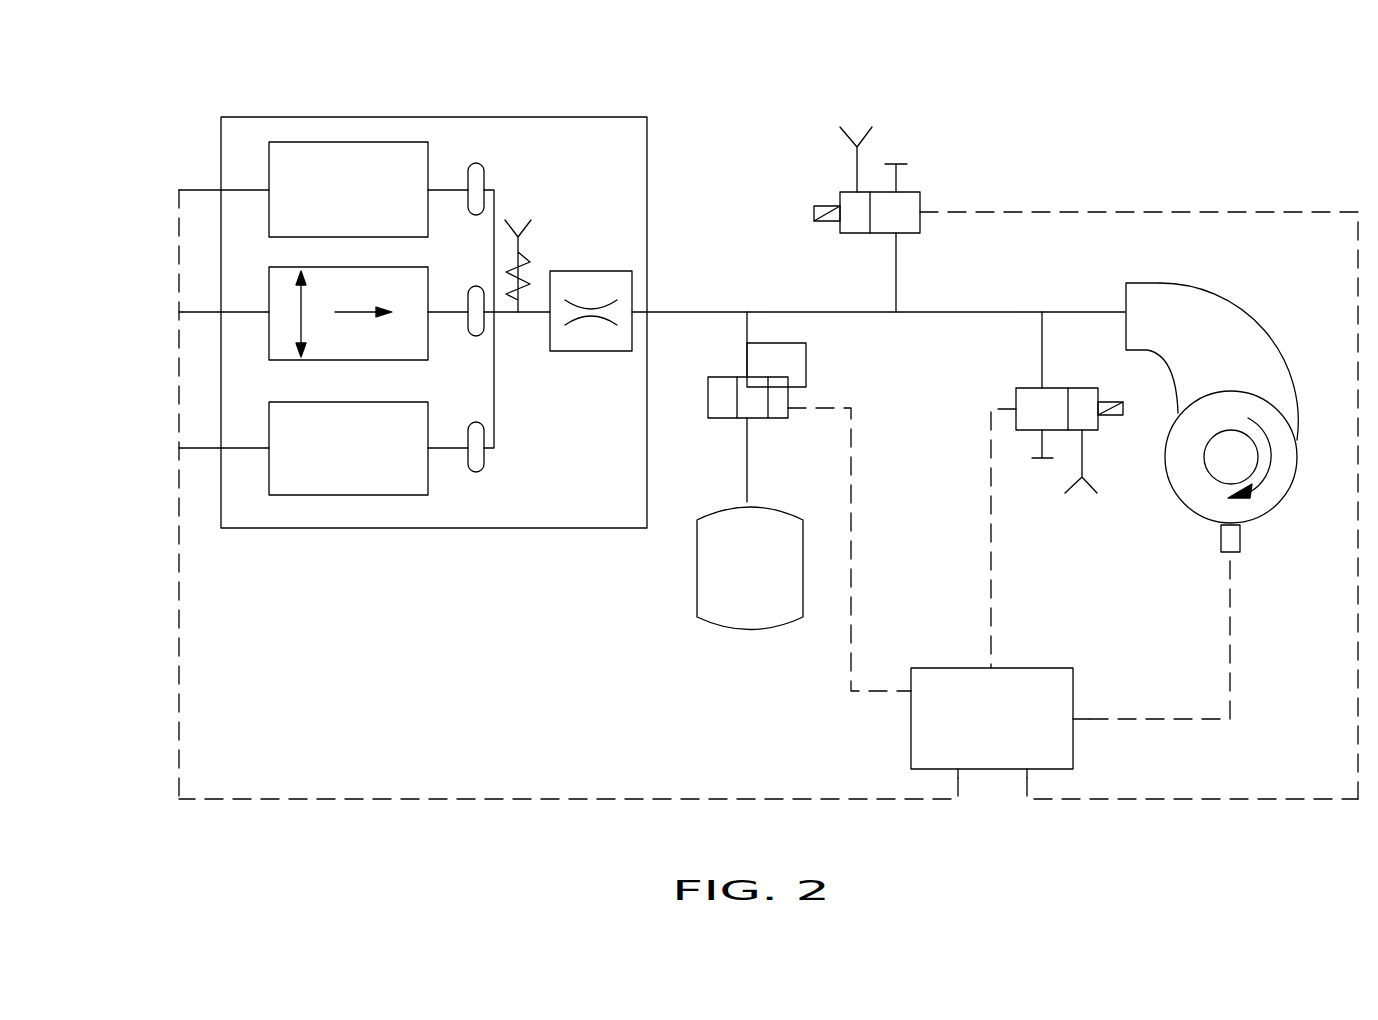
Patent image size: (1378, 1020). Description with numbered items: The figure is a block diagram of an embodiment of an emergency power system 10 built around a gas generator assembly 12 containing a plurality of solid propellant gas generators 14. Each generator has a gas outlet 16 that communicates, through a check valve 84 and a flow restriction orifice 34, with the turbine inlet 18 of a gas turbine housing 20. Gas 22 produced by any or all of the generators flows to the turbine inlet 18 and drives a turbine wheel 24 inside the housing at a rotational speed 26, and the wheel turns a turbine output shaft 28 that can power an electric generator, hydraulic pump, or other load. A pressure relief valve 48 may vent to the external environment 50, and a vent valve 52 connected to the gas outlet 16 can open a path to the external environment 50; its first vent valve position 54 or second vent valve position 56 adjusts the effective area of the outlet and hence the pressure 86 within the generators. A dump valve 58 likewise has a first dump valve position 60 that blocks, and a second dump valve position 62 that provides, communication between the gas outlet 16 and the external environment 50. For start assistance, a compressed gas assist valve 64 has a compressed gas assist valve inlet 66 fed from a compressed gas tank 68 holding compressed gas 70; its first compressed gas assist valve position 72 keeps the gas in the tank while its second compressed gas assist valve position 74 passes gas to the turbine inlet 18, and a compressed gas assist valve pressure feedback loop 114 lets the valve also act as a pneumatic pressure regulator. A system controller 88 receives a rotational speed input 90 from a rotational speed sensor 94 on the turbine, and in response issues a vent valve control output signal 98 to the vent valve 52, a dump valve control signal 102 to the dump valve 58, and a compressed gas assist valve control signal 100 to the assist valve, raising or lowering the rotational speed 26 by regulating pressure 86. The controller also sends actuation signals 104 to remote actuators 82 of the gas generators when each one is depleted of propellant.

The emergency power system 10 is at (1004, 86).
The gas generator assembly 12 is at (372, 117).
The solid propellant gas generators 14 is at (430, 168).
The gas outlet 16 is at (430, 205).
The turbine inlet 18 is at (1125, 300).
The gas turbine housing 20 is at (1195, 290).
The gas 22 is at (358, 302).
The turbine wheel 24 is at (1278, 405).
The rotational speed 26 is at (1262, 486).
The turbine output shaft 28 is at (1225, 478).
The flow restriction orifice 34 is at (558, 271).
The pressure relief valve 48 is at (520, 222).
The external environment 50 is at (747, 198).
The vent valve 52 is at (921, 225).
The first vent valve position 54 is at (900, 165).
The second vent valve position 56 is at (857, 135).
The dump valve 58 is at (1016, 398).
The first dump valve position 60 is at (1040, 460).
The second dump valve position 62 is at (1089, 488).
The compressed gas assist valve 64 is at (708, 415).
The compressed gas assist valve inlet 66 is at (748, 420).
The compressed gas tank 68 is at (697, 566).
The compressed gas 70 is at (707, 597).
The first compressed gas assist valve position 72 is at (737, 392).
The second compressed gas assist valve position 74 is at (765, 402).
The remote actuators 82 is at (208, 188).
The check valve 84 is at (484, 172).
The pressure 86 is at (305, 315).
The system controller 88 is at (963, 668).
The rotational speed input 90 is at (1113, 718).
The rotational speed sensor 94 is at (1240, 543).
The vent valve control output signal 98 is at (1140, 798).
The compressed gas assist valve control signal 100 is at (852, 584).
The dump valve control signal 102 is at (991, 606).
The actuation signals 104 is at (712, 798).
The compressed gas assist valve pressure feedback loop 114 is at (806, 365).